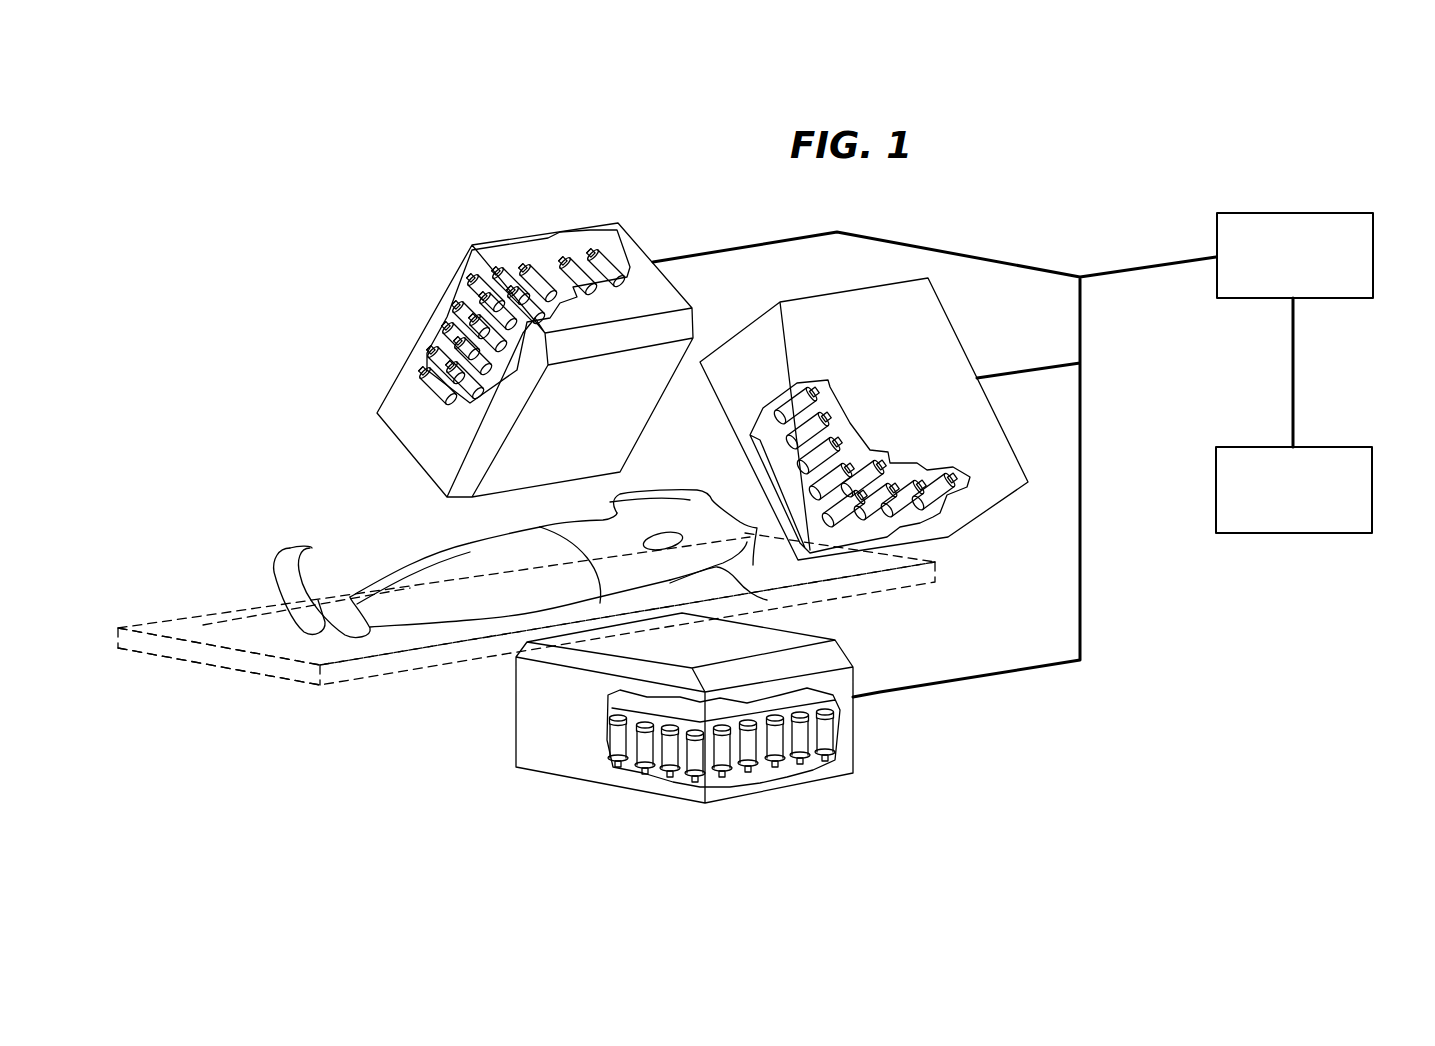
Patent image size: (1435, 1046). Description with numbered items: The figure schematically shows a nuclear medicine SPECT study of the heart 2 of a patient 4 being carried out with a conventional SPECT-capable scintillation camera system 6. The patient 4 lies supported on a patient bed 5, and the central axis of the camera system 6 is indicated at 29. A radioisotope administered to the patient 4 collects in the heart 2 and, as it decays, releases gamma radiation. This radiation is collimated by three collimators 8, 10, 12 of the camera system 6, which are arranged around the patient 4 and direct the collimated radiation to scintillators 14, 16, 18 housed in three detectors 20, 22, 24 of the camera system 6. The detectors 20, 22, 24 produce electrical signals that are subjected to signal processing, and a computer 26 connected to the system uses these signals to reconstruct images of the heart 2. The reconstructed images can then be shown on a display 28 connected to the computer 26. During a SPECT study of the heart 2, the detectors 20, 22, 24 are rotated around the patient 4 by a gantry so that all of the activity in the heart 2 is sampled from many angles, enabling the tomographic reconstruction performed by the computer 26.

The heart 2 is at (747, 600).
The patient 4 is at (383, 615).
The patient bed 5 is at (345, 672).
The scintillation camera system 6 is at (918, 748).
The collimator 8 is at (535, 338).
The collimator 10 is at (840, 437).
The collimator 12 is at (684, 722).
The scintillator 14 is at (547, 305).
The scintillator 16 is at (907, 533).
The scintillator 18 is at (758, 707).
The detector 20 is at (627, 306).
The detector 22 is at (889, 395).
The detector 24 is at (545, 738).
The computer 26 is at (1373, 245).
The display 28 is at (1372, 475).
The central axis 29 is at (243, 620).